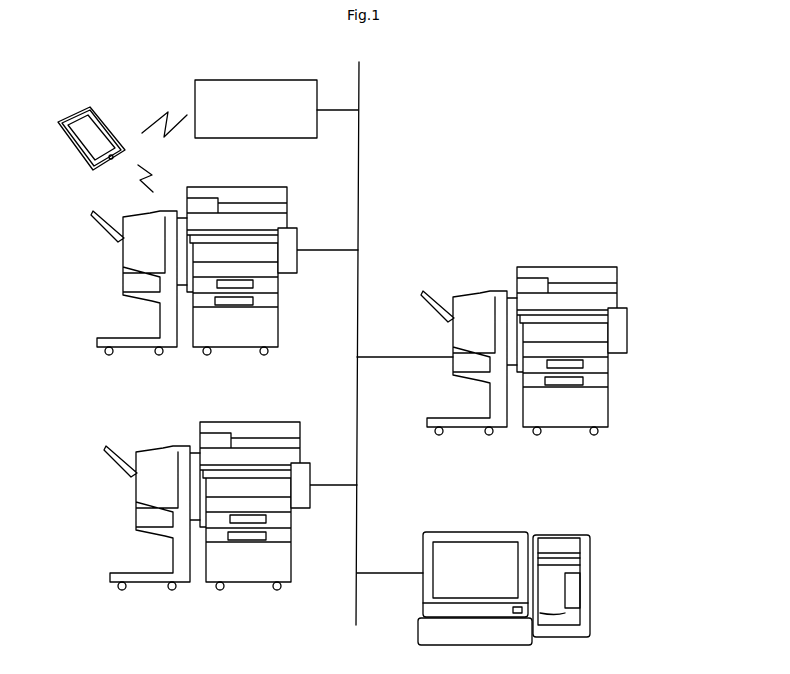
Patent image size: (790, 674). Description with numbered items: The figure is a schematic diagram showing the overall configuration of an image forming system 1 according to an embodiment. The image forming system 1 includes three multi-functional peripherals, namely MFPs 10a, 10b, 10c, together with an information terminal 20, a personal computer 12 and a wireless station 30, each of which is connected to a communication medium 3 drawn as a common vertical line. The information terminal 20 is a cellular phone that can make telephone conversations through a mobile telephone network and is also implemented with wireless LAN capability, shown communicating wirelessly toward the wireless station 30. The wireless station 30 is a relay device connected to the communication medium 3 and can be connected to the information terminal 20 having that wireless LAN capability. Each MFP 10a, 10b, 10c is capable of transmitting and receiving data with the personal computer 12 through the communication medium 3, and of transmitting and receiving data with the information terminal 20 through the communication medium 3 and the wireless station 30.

The image forming system 1 is at (612, 157).
The communication medium 3 is at (360, 207).
The MFP 10a is at (214, 187).
The MFP 10b is at (280, 422).
The MFP 10c is at (532, 267).
The personal computer 12 is at (553, 535).
The information terminal 20 is at (111, 132).
The wireless station 30 is at (303, 140).